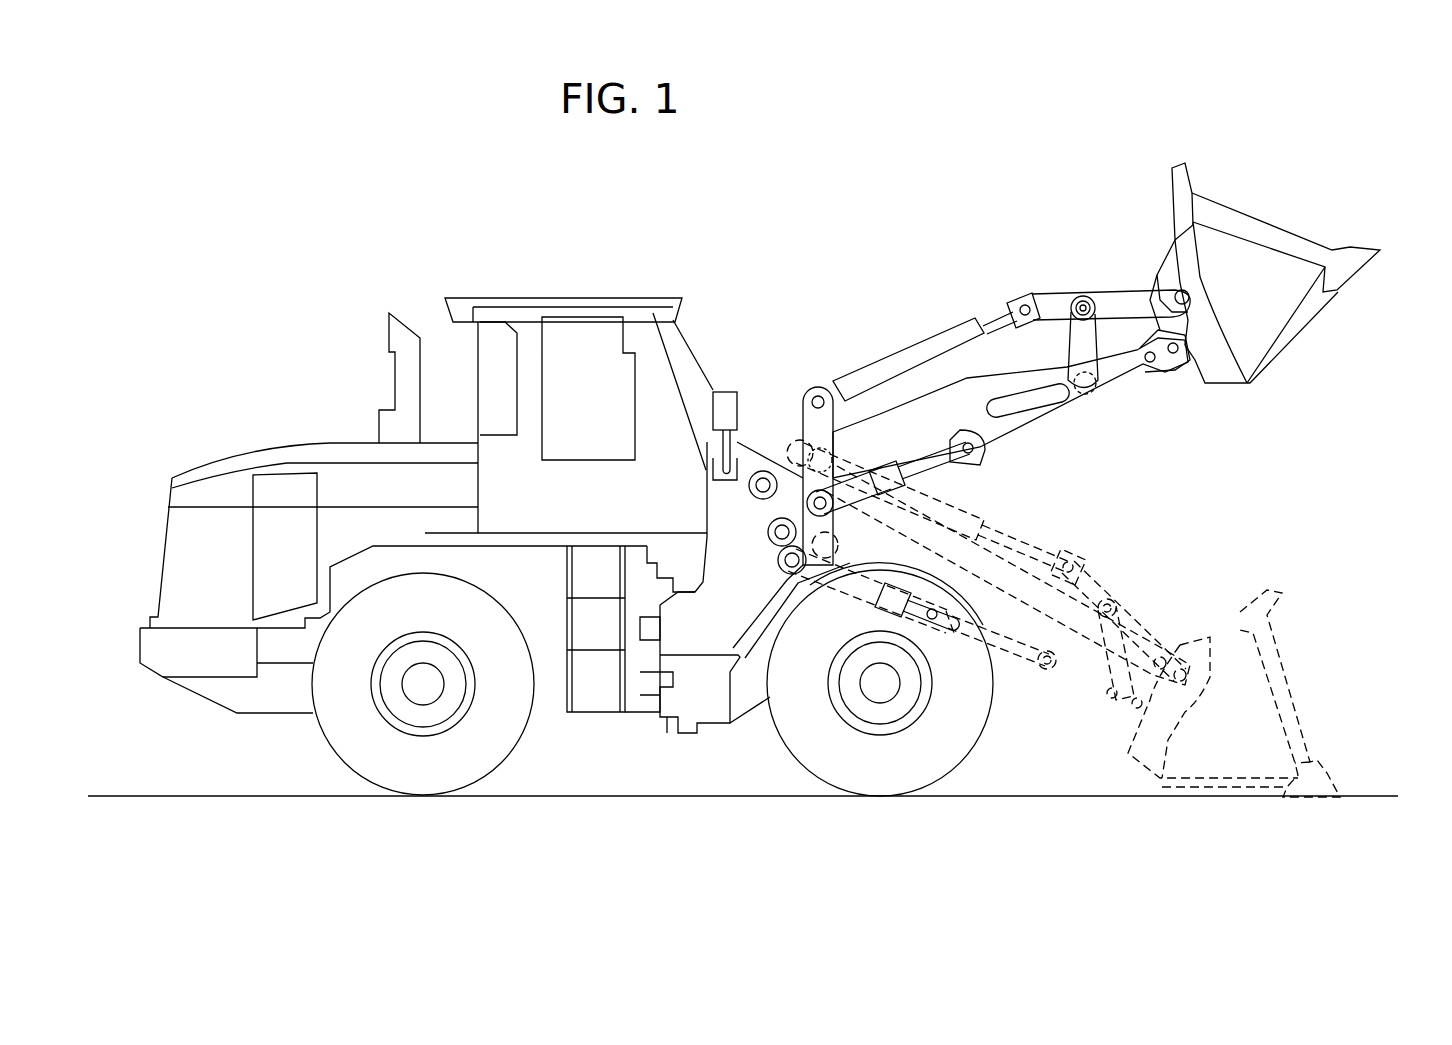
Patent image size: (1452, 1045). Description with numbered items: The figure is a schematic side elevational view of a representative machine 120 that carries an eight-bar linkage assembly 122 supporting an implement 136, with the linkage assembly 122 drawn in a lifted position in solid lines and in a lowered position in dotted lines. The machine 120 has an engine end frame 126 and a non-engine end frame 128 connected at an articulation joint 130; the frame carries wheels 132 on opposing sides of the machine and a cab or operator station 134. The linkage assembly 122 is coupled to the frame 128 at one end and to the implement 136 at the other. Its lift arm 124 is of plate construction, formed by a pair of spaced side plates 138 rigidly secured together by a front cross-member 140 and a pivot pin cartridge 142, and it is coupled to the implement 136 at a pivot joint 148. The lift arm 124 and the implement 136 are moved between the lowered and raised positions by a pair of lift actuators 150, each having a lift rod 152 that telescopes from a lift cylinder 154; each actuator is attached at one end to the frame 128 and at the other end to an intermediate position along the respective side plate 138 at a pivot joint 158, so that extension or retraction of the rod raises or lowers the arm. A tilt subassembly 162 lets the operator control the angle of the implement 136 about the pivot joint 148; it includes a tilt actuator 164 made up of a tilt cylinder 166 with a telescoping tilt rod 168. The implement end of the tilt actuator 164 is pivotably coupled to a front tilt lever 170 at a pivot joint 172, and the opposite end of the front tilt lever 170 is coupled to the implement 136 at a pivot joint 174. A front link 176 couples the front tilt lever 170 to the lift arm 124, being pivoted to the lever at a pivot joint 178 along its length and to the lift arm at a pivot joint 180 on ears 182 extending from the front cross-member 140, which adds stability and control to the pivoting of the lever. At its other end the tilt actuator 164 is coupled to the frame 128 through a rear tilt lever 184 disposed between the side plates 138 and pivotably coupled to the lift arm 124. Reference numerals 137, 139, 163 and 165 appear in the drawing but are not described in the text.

The machine 120 is at (250, 300).
The eight-bar linkage assembly 122 is at (1325, 398).
The lift arm 124 is at (1053, 427).
The engine end frame 126 is at (240, 697).
The non-engine end frame 128 is at (703, 700).
The articulation joint 130 is at (663, 688).
The wheels 132 is at (387, 755).
The cab or operator station 134 is at (640, 335).
The implement 136 is at (1270, 222).
The bucket pivot pin 137 is at (1123, 372).
The side plates 138 is at (1013, 663).
The sensor mount 139 is at (775, 475).
The front cross-member 140 is at (1098, 585).
The pivot pin cartridge 142 is at (967, 400).
The pivot joint 148 is at (1163, 362).
The lift actuators 150 is at (945, 488).
The lift rod 152 is at (900, 478).
The lift cylinder 154 is at (930, 550).
The pivot joints 158 is at (975, 450).
The tilt subassembly 162 is at (1036, 290).
The tilt cylinder rod 163 is at (1002, 297).
The tilt actuator 164 is at (957, 330).
The tilt cylinder base pivot 165 is at (850, 380).
The tilt cylinder 166 is at (975, 518).
The tilt rod 168 is at (1000, 305).
The front tilt lever 170 is at (1107, 305).
The pivot joint 172 is at (1022, 303).
The pivot joint 174 is at (1150, 262).
The front link 176 is at (1073, 345).
The pivot joint 178 is at (1080, 297).
The pivot joint 180 is at (1080, 390).
The ears 182 is at (1080, 400).
The rear tilt lever 184 is at (790, 450).